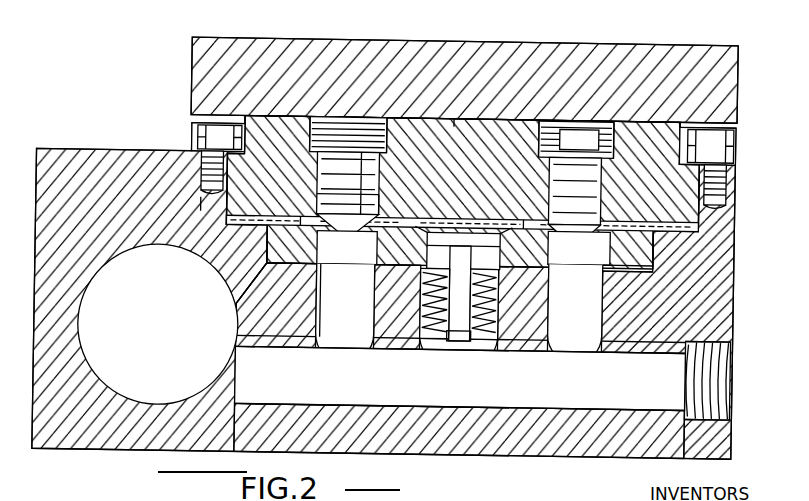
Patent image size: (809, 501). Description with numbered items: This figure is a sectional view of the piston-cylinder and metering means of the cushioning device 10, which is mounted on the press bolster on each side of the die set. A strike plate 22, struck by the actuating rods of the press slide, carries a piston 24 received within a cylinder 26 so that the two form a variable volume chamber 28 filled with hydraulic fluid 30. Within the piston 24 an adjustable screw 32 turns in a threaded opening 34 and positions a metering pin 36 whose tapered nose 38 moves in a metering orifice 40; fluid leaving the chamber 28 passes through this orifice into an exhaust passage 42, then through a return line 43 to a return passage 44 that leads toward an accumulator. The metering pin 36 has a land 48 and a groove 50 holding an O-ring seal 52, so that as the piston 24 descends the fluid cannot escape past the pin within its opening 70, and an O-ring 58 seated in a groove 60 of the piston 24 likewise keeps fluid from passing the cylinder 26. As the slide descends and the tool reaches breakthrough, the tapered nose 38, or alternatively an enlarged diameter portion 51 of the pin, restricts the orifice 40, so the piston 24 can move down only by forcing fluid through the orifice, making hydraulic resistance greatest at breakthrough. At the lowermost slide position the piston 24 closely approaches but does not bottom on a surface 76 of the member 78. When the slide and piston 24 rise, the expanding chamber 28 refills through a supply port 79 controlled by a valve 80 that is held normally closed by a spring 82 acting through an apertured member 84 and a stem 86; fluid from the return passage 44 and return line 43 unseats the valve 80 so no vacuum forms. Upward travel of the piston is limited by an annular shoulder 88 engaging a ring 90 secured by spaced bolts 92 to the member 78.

The cushioning device 10 is at (90, 462).
The strike plate 22 is at (577, 40).
The piston 24 is at (452, 118).
The cylinder 26 is at (204, 184).
The variable volume chamber 28 is at (523, 218).
The hydraulic fluid 30 is at (668, 238).
The adjustable screw 32 is at (386, 140).
The threaded opening 34 is at (380, 118).
The metering pin 36 is at (622, 205).
The tapered nose 38 is at (614, 249).
The metering orifice 40 is at (547, 238).
The exhaust passage 42 is at (322, 305).
The return line 43 is at (258, 405).
The return passage 44 is at (86, 342).
The land 48 is at (380, 198).
The groove 50 is at (318, 183).
The enlarged diameter portion 51 is at (308, 228).
The O-ring seal 52 is at (322, 198).
The O-ring 58 is at (222, 200).
The groove 60 is at (240, 195).
The opening 70 is at (380, 207).
The surface 76 is at (246, 228).
The member 78 is at (735, 275).
The supply port 79 is at (488, 228).
The valve 80 is at (450, 230).
The spring 82 is at (499, 296).
The apertured member 84 is at (482, 344).
The stem 86 is at (440, 344).
The annular shoulder 88 is at (243, 168).
The ring 90 is at (198, 146).
The bolts 92 is at (197, 130).